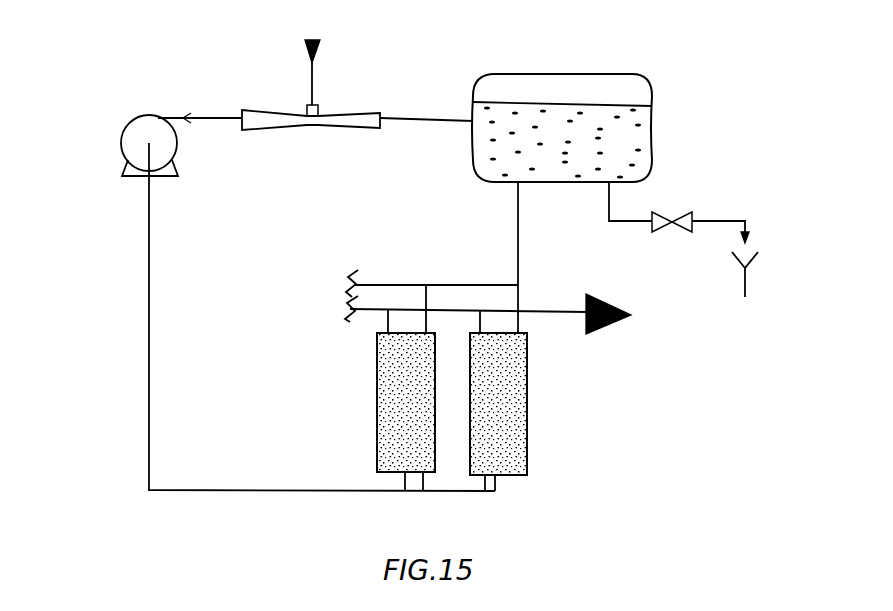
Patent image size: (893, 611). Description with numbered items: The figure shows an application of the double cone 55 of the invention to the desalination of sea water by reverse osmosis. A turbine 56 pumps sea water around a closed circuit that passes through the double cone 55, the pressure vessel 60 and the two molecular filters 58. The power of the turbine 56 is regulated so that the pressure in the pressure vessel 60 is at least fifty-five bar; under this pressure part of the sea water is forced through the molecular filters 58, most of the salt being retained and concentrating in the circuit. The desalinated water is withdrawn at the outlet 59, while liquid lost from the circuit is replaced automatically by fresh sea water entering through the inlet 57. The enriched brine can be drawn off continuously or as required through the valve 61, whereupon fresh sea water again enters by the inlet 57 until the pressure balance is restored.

The double cone 55 is at (307, 118).
The turbine 56 is at (132, 149).
The inlet 57 is at (312, 42).
The molecular filters 58 is at (424, 476).
The outlet 59 is at (615, 322).
The pressure vessel 60 is at (617, 160).
The valve 61 is at (672, 233).